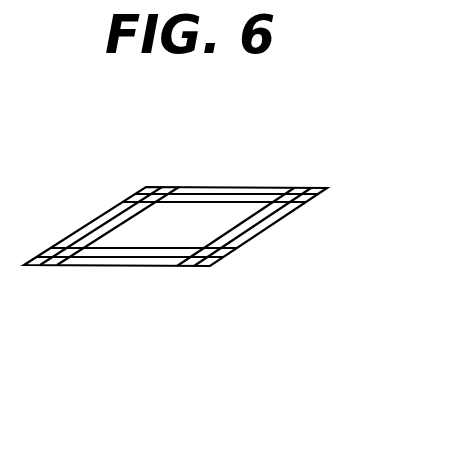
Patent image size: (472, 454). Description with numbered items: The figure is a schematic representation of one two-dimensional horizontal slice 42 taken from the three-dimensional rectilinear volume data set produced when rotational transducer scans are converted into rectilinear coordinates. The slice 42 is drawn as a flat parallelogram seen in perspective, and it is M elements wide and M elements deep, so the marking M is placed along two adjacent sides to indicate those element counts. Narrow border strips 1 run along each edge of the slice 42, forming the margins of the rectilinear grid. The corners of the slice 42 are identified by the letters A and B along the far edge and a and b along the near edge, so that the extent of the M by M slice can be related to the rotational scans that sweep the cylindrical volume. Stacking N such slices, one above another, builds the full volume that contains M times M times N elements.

The two-dimensional horizontal slice 42 is at (186, 228).
The strip 1 is at (169, 243).
The corner A is at (135, 167).
The corner B is at (337, 179).
The corner a is at (12, 257).
The corner b is at (218, 285).
The number of elements along a horizontal axis M is at (269, 247).